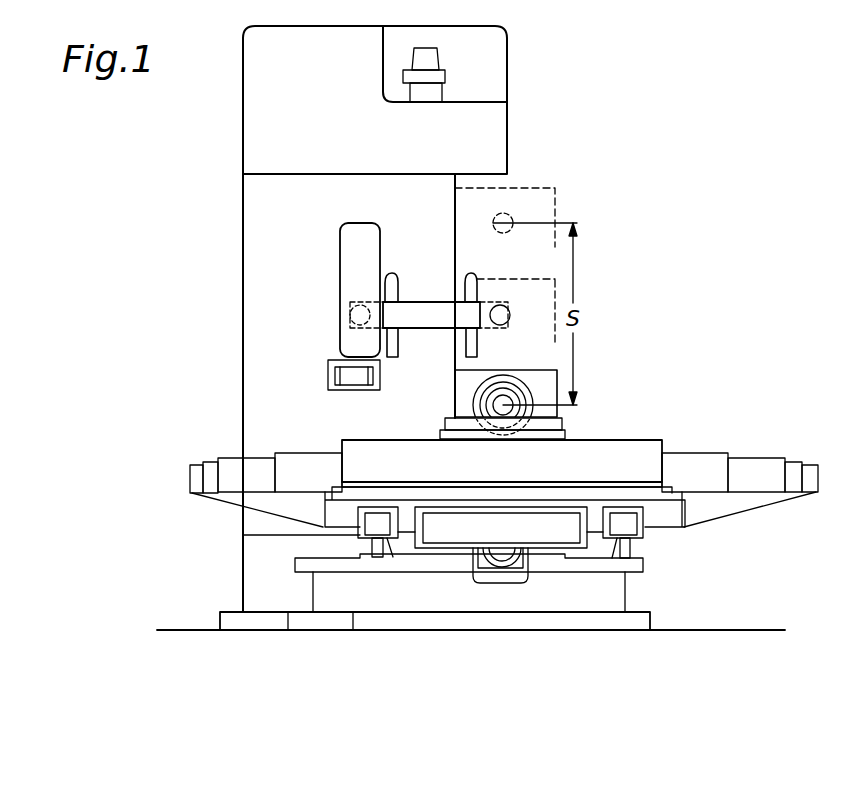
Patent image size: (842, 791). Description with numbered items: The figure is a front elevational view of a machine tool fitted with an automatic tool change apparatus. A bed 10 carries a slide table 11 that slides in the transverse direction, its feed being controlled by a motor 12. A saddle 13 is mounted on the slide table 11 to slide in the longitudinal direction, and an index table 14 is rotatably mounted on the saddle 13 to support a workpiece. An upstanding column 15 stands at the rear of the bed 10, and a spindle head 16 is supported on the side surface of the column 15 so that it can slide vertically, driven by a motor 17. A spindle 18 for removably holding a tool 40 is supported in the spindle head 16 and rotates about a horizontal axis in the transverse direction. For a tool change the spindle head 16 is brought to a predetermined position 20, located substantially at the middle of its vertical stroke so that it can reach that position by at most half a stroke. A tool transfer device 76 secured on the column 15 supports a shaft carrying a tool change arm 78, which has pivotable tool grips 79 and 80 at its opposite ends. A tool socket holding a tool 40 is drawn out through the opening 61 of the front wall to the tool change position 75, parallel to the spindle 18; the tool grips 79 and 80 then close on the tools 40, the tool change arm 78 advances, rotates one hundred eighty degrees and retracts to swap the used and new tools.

The bed 10 is at (410, 600).
The slide table 11 is at (658, 517).
The motor 12 is at (507, 552).
The saddle 13 is at (633, 448).
The index table 14 is at (566, 428).
The column 15 is at (250, 377).
The spindle head 16 is at (545, 375).
The motor 17 is at (440, 60).
The spindle 18 is at (476, 396).
The predetermined position 20 is at (510, 307).
The tool 40 is at (500, 433).
The opening 61 is at (352, 257).
The tool change position 75 is at (354, 314).
The tool transfer device 76 is at (425, 339).
The tool change arm 78 is at (420, 308).
The tool grip 79 is at (395, 273).
The tool grip 80 is at (470, 343).